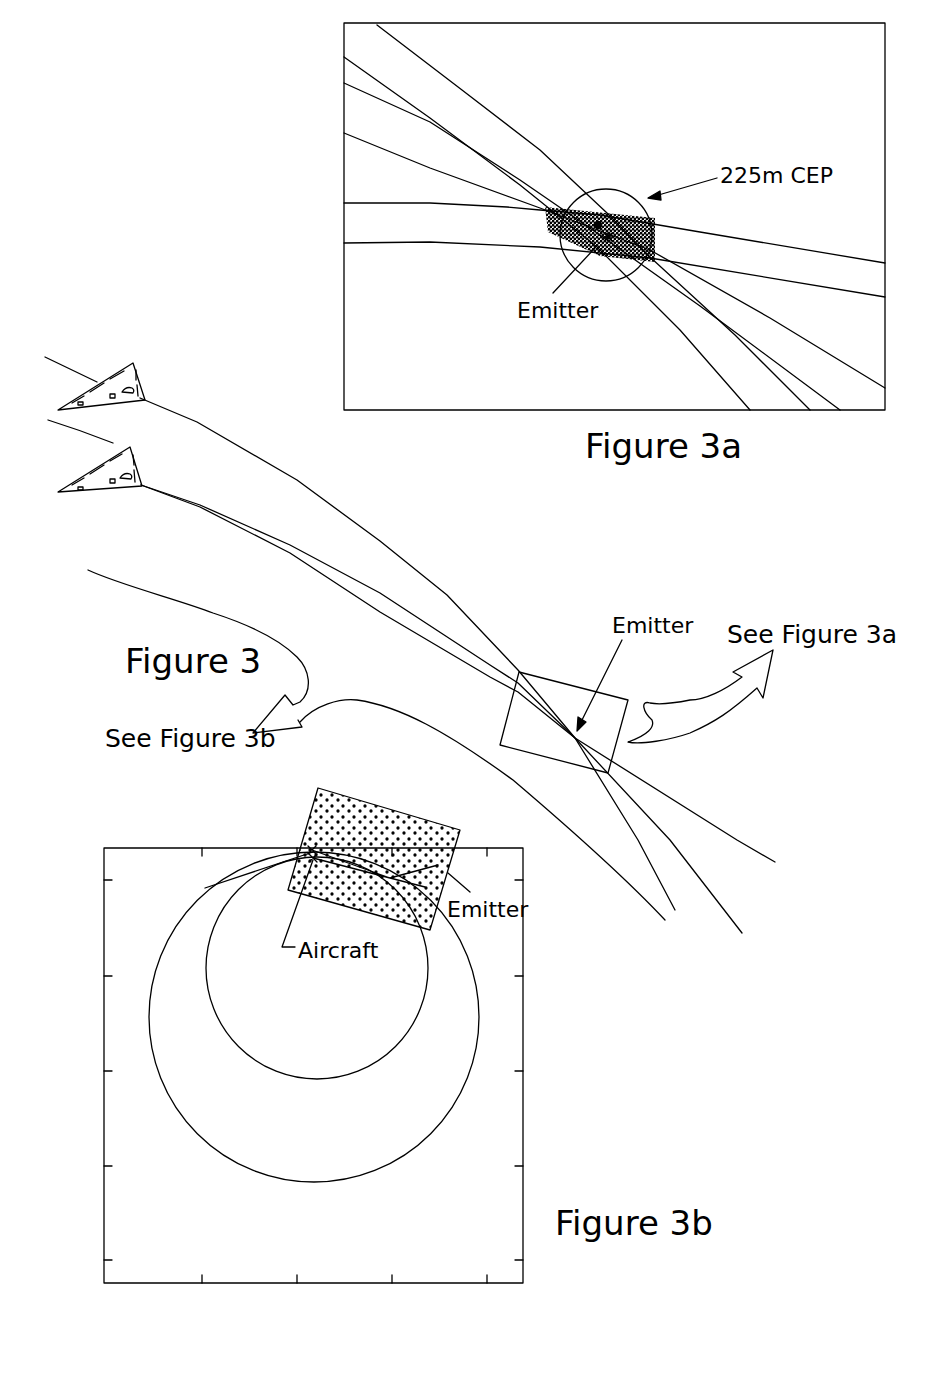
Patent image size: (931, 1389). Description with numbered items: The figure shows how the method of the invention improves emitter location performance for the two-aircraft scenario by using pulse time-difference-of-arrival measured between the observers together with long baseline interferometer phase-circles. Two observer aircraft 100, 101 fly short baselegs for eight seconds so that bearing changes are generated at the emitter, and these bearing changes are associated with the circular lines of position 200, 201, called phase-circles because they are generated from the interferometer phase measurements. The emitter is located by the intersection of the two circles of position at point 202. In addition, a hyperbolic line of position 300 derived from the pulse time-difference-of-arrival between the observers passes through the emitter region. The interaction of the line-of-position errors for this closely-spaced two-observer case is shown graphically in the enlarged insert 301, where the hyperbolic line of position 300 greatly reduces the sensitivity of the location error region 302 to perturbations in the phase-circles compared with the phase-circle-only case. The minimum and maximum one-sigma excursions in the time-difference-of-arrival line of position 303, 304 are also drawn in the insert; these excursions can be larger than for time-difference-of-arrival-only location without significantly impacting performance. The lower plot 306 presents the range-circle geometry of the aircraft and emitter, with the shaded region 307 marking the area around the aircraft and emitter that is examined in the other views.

In FIG. 3, the aircraft 100 is at (137, 370).
In FIG. 3, the aircraft 101 is at (105, 490).
In FIG. 3, the circular line of position 200 is at (197, 422).
In FIG. 3, the circular line of position 201 is at (193, 503).
In FIG. 3, the intersection point 202 is at (565, 720).
In FIG. 3, the hyperbolic line of position 300 is at (393, 620).
In FIG. 3A, the insert 301 is at (342, 268).
In FIG. 3A, the location error region 302 is at (607, 218).
In FIG. 3A, the minimum one-sigma excursion in the TDOA LOP 303 is at (467, 243).
In FIG. 3A, the maximum one-sigma excursion in the TDOA LOP 304 is at (417, 204).
In FIG. 3B, the plot frame of range circles 306 is at (525, 1072).
In FIG. 3B, the emitter region box 307 is at (310, 813).